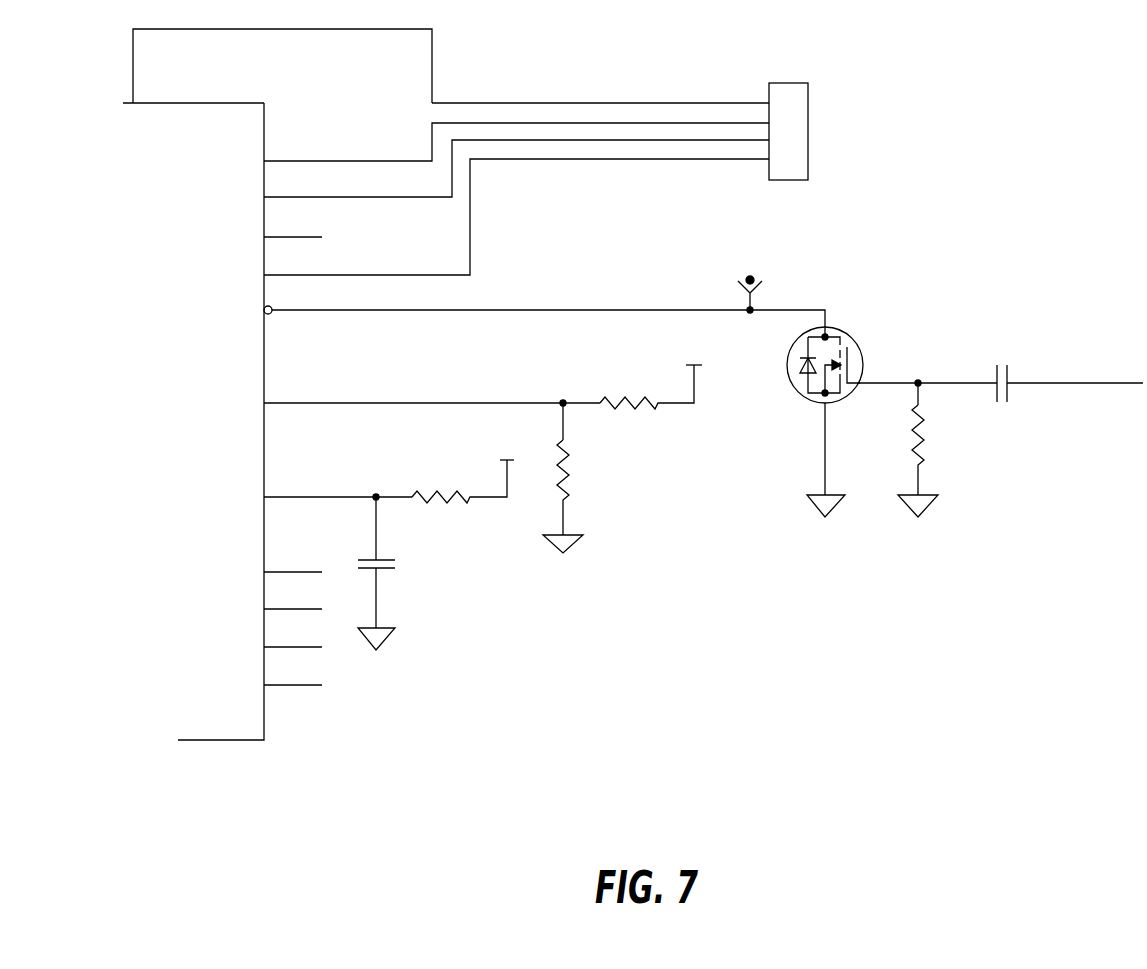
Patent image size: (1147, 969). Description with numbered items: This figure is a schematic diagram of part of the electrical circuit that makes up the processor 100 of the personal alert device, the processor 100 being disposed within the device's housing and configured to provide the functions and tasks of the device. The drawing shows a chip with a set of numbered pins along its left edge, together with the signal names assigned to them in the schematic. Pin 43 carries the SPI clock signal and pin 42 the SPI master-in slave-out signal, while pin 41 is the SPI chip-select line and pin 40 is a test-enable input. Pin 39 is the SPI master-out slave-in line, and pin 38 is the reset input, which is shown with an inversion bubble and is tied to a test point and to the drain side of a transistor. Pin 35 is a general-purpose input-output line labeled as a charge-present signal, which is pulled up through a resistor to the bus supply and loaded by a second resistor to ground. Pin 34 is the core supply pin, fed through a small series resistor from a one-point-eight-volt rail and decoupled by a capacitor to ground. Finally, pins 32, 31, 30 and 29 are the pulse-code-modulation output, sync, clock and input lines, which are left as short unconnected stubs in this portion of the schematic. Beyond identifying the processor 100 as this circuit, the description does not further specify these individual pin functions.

The processor 100 is at (142, 413).
The SPI_CLK pin 43 is at (191, 131).
The SPI_MISO pin 42 is at (473, 146).
The SPI_CS# pin 41 is at (477, 172).
The TEST_EN pin 40 is at (252, 234).
The SPI_MOSI pin 39 is at (473, 221).
The RST# pin 38 is at (519, 317).
The PIO5 pin 35 is at (410, 400).
The VDD_CORE pin 34 is at (288, 494).
The PCM_OUT pin 32 is at (248, 569).
The PCM_SYNC pin 31 is at (242, 606).
The PCM_CLK pin 30 is at (249, 644).
The PCM_IN pin 29 is at (257, 682).